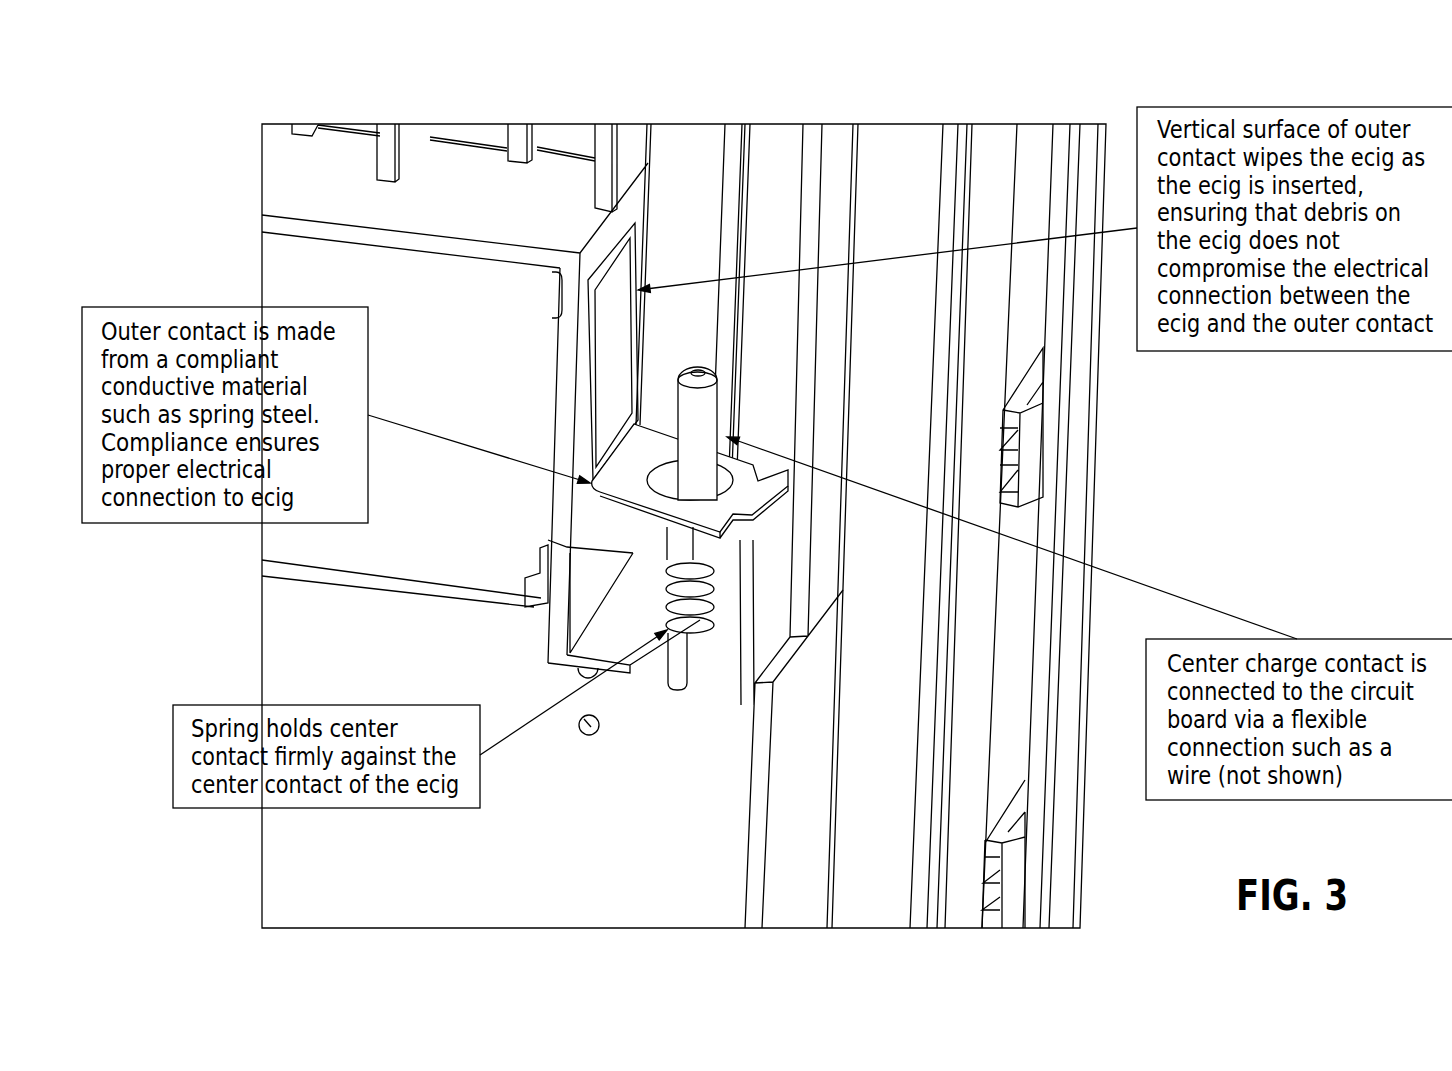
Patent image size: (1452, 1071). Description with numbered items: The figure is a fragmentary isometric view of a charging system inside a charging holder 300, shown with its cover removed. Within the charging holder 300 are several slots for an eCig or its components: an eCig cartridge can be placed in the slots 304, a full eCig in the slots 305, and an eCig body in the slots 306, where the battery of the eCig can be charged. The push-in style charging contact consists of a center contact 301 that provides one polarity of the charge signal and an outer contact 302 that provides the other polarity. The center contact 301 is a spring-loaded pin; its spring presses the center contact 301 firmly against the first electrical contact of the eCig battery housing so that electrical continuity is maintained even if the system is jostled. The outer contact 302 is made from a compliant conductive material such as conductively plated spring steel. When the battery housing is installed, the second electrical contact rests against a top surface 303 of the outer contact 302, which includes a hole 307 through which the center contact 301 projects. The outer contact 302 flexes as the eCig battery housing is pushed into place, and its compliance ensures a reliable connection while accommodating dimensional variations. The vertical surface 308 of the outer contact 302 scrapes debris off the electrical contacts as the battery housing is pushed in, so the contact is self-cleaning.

The charging holder 300 is at (254, 90).
The center contact 301 is at (707, 403).
The outer contact 302 is at (612, 465).
The top surface 303 is at (572, 512).
The slots 304 is at (492, 124).
The slots 305 is at (989, 124).
The slots 306 is at (736, 124).
The hole 307 is at (723, 493).
The vertical surface 308 is at (640, 317).